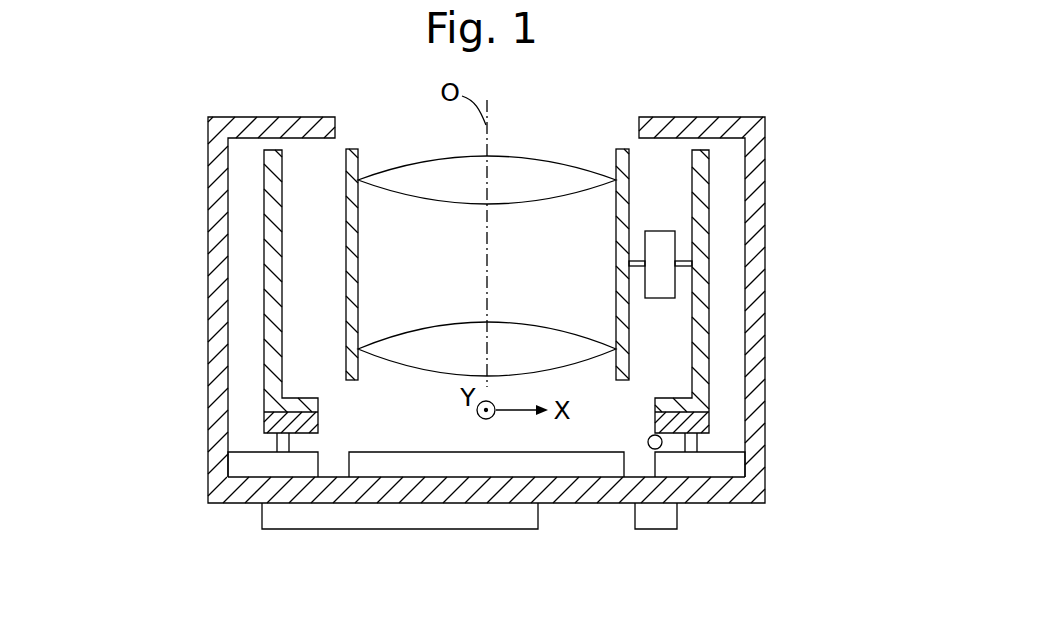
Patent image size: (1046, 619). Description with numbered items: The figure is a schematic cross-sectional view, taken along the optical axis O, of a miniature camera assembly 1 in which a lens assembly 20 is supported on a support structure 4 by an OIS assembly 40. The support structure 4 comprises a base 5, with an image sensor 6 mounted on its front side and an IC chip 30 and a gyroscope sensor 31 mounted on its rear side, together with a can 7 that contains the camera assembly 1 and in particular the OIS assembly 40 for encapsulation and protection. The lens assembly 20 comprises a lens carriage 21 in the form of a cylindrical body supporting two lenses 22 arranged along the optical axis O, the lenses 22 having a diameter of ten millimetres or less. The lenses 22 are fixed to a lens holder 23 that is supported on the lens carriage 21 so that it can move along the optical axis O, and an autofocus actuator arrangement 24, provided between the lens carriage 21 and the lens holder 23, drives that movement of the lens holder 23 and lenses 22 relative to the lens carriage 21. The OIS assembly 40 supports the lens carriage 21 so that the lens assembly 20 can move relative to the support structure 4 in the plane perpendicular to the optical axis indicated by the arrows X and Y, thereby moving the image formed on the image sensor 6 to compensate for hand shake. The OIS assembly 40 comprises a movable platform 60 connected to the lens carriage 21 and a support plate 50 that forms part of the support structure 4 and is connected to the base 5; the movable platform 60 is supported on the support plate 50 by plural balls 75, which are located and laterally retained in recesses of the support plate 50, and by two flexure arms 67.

The camera assembly 1 is at (172, 345).
The support structure 4 is at (223, 488).
The base 5 is at (258, 488).
The image sensor 6 is at (558, 463).
The can 7 is at (218, 287).
The lens assembly 20 is at (395, 150).
The lens carriage 21 is at (273, 212).
The lenses 22 is at (545, 178).
The lens holder 23 is at (346, 178).
The autofocus actuator arrangement 24 is at (665, 245).
The IC chip 30 is at (398, 516).
The gyroscope sensor 31 is at (663, 520).
The OIS assembly 40 is at (246, 437).
The support plate 50 is at (732, 465).
The movable platform 60 is at (700, 424).
The flexure arms 67 is at (690, 447).
The balls 75 is at (650, 437).